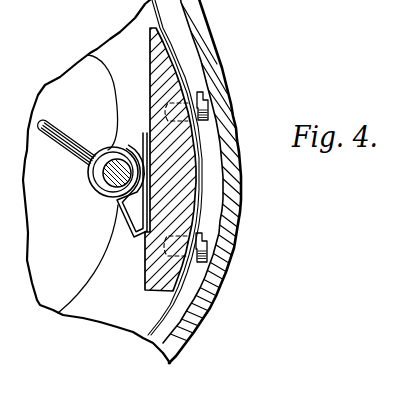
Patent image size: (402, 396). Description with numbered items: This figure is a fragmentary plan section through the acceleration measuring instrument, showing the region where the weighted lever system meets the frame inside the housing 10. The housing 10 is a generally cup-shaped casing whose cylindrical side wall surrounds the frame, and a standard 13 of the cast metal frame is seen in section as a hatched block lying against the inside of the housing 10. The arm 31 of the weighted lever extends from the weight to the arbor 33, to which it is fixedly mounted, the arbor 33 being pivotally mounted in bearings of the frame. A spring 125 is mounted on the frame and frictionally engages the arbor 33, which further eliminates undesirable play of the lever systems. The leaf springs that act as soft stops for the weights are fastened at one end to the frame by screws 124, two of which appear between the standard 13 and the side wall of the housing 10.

The housing 10 is at (210, 35).
The standard 13 is at (187, 183).
The screws 124 is at (203, 98).
The arm 31 is at (70, 138).
The arbor 33 is at (108, 178).
The spring 125 is at (117, 218).